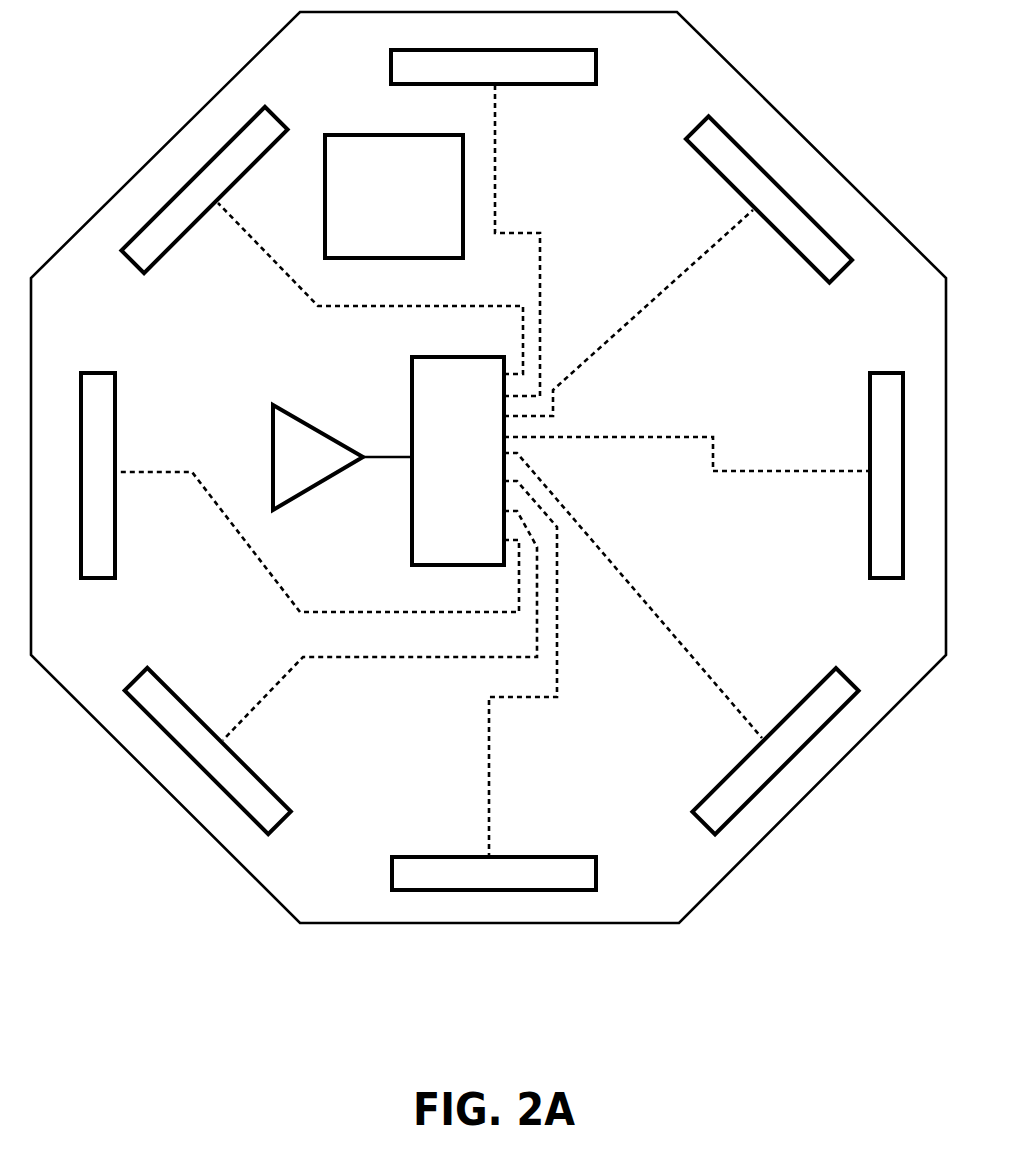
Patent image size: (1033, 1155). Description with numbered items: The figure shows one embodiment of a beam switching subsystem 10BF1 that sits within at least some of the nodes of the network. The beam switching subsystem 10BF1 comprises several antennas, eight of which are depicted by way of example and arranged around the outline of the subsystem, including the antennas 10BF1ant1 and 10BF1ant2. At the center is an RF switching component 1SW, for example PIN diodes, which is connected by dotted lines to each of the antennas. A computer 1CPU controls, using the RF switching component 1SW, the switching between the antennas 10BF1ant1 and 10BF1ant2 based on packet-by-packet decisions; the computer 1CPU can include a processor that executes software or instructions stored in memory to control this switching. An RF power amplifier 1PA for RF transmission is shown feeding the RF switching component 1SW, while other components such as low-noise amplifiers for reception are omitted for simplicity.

The beam switching subsystem 10BF1 is at (298, 928).
The antenna 10BF1ant1 is at (870, 558).
The antenna 10BF1ant2 is at (697, 806).
The computer 1CPU is at (430, 213).
The RF power amplifier 1PA is at (329, 468).
The RF switching component 1SW is at (490, 474).